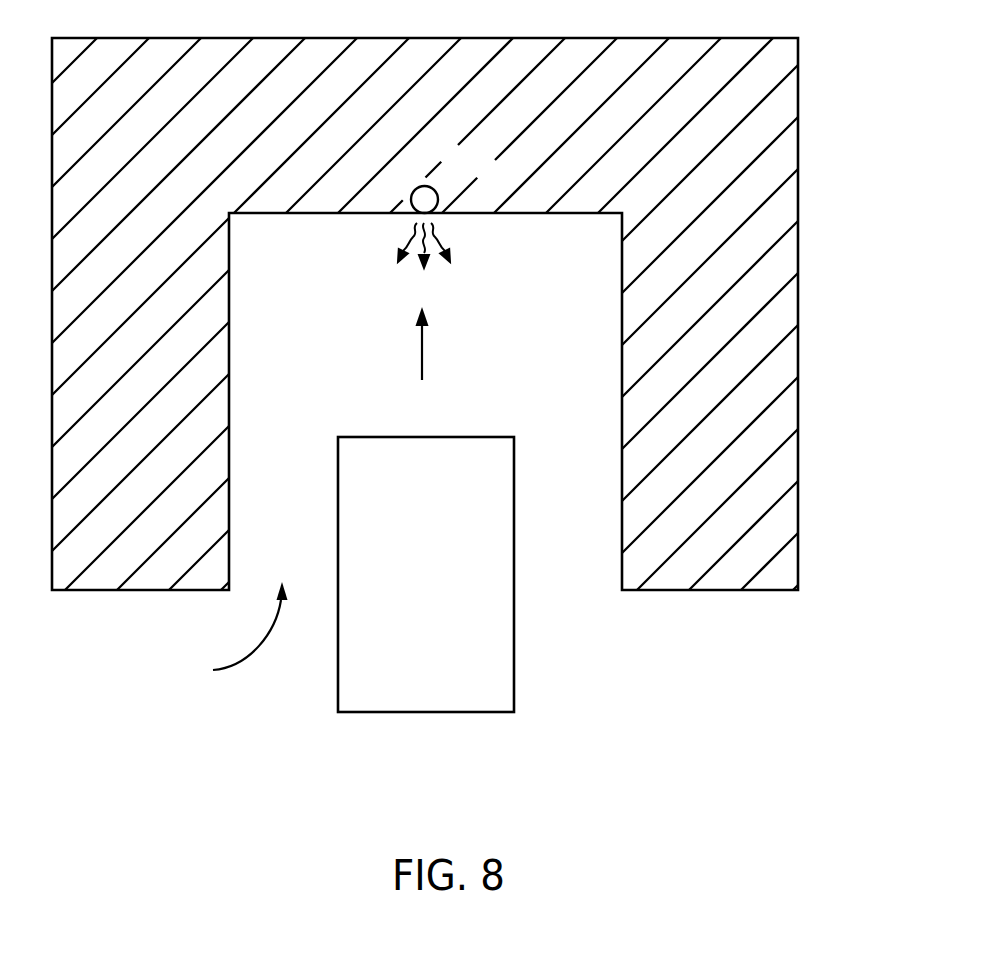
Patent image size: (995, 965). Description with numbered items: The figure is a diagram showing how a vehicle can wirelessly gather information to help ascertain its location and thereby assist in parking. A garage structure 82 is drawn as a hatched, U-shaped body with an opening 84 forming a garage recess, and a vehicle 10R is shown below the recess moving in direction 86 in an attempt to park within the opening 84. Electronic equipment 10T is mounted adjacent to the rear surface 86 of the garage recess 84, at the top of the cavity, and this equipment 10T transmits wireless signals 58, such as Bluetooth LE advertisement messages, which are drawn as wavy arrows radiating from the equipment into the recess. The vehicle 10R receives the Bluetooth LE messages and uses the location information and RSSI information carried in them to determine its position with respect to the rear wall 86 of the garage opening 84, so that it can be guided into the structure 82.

The garage structure 82 is at (713, 582).
The electronic equipment 10T is at (439, 200).
The vehicle 10R is at (513, 661).
The wireless signals 58 is at (416, 238).
The direction 86 is at (425, 348).
The opening 84 is at (235, 633).